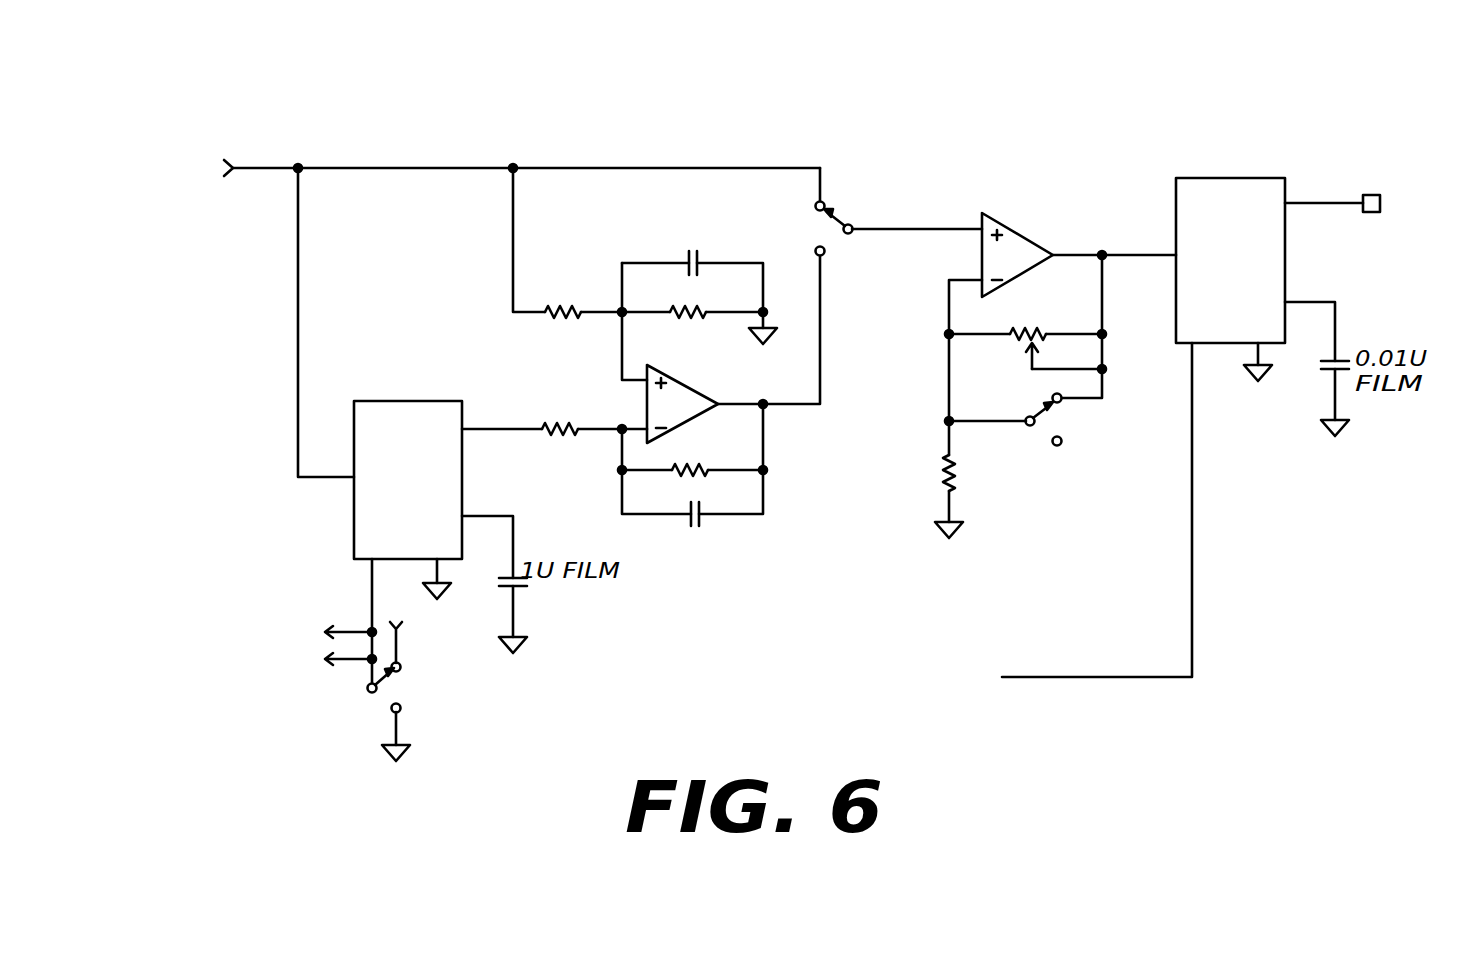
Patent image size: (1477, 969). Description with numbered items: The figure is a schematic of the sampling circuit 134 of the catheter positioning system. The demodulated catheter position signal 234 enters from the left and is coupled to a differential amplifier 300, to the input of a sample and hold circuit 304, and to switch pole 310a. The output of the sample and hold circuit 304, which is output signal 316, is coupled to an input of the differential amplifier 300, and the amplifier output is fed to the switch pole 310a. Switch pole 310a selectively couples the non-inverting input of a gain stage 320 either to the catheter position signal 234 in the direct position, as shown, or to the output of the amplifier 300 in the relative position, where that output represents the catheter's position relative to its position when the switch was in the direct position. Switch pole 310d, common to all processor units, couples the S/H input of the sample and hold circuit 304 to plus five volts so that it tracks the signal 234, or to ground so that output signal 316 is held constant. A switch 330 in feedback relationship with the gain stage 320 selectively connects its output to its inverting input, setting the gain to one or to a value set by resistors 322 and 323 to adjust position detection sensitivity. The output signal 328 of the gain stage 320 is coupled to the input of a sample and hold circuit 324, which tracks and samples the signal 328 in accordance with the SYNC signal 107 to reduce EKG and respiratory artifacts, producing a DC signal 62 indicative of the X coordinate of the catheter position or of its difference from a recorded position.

The channel measurement circuit 134 is at (829, 82).
The demodulated catheter position signal 234 is at (268, 174).
The sample and hold circuit 304 is at (395, 401).
The output signal 316 is at (498, 428).
The differential amplifier 300 is at (688, 390).
The switch pole 310a is at (857, 173).
The switch pole 310d is at (375, 706).
The gain stage 320 is at (1020, 240).
The resistor 322 is at (1072, 288).
The resistor 323 is at (952, 478).
The output signal 328 is at (1064, 254).
The sample and hold circuit 324 is at (1210, 178).
The DC signal 62 is at (1345, 206).
The switch 330 is at (1045, 448).
The SYNC signal 107 is at (1062, 677).